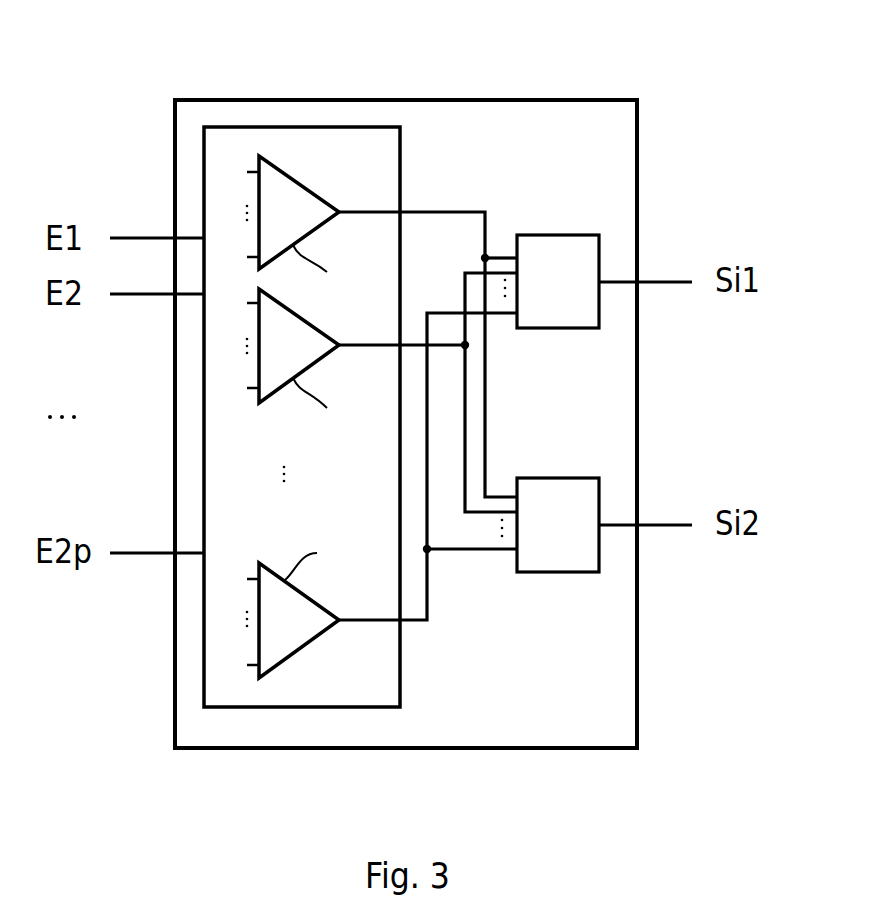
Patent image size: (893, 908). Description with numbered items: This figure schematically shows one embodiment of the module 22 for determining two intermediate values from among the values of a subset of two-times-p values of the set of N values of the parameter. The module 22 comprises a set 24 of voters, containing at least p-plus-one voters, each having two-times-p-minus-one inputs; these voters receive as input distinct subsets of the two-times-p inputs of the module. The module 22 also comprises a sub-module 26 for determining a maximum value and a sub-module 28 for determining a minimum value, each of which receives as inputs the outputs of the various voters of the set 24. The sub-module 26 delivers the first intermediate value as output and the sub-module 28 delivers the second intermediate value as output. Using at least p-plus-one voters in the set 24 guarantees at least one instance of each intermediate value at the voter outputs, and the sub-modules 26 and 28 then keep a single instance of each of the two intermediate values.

The module for determining two intermediate values 22 is at (552, 100).
The set of voters 24 is at (258, 127).
The sub-module for determining a maximum value 26 is at (560, 235).
The sub-module for determining a minimum value 28 is at (563, 478).